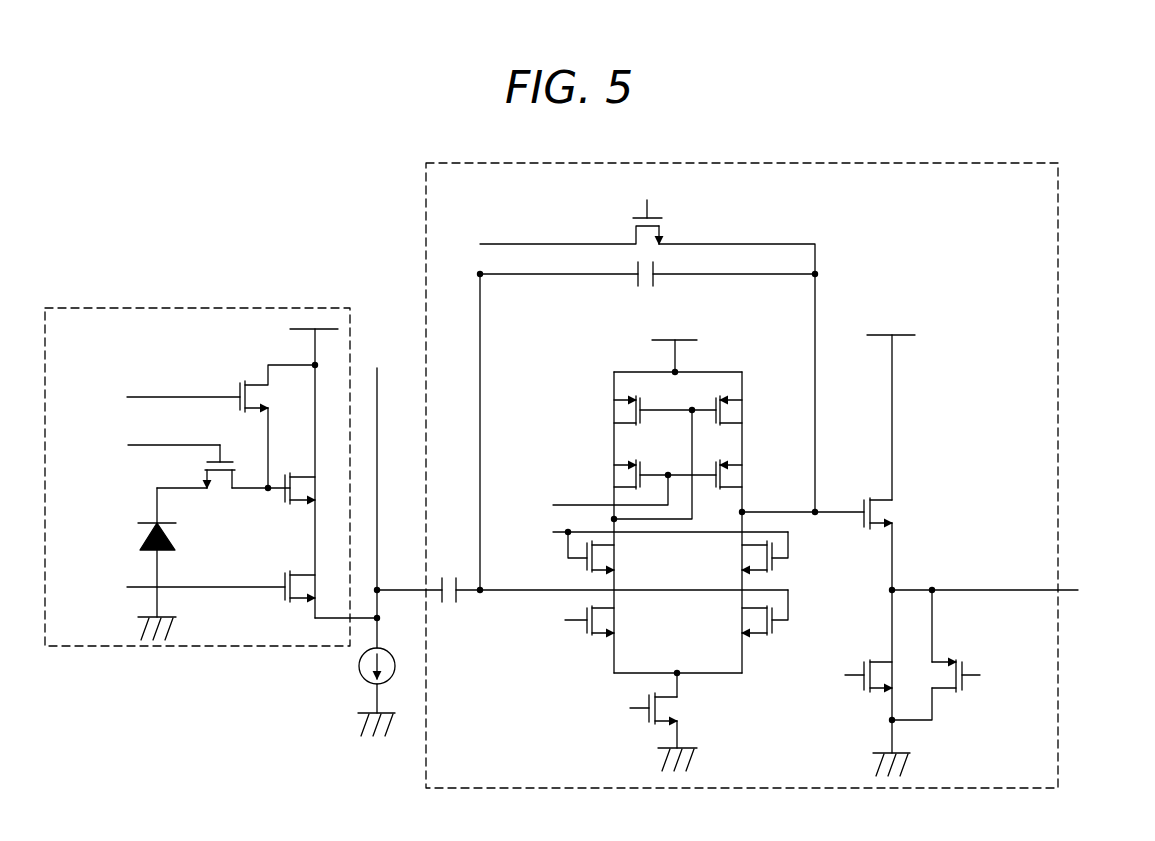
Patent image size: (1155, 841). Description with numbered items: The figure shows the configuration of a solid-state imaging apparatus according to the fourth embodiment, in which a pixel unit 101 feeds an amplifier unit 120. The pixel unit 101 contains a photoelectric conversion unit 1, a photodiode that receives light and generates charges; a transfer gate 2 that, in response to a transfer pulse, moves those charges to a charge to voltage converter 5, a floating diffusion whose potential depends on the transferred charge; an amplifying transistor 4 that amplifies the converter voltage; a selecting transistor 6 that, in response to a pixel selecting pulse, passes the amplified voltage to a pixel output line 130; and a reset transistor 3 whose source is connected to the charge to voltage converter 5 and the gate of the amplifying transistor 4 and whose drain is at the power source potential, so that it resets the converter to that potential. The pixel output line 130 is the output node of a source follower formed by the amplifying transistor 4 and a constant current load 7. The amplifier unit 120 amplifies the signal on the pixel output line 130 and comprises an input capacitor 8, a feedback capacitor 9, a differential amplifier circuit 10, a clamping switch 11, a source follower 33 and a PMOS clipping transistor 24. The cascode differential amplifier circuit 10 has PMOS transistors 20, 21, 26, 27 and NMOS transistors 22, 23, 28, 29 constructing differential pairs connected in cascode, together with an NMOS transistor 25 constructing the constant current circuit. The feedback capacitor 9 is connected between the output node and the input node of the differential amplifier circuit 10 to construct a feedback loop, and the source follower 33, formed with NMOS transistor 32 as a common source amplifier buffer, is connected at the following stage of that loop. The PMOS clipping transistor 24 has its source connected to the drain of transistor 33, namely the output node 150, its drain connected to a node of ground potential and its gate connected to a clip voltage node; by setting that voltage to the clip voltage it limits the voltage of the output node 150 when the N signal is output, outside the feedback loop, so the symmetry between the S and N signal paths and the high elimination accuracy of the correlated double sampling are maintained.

The photoelectric conversion unit 1 is at (148, 545).
The transfer gate 2 is at (222, 490).
The reset transistor 3 is at (234, 386).
The amplifying transistor 4 is at (308, 499).
The charge to voltage converter 5 is at (256, 490).
The selecting transistor 6 is at (284, 599).
The constant current load 7 is at (358, 672).
The input capacitor 8 is at (452, 608).
The feedback capacitor 9 is at (655, 283).
The differential amplifier circuit 10 is at (686, 555).
The clamping switch 11 is at (633, 234).
The PMOS transistor 20 is at (612, 410).
The PMOS transistor 21 is at (745, 410).
The NMOS transistor 22 is at (579, 632).
The NMOS transistor 23 is at (742, 620).
The PMOS clipping transistor 24 is at (960, 693).
The NMOS transistor 25 is at (682, 708).
The PMOS transistor 26 is at (612, 478).
The PMOS transistor 27 is at (745, 478).
The NMOS transistor 28 is at (614, 558).
The NMOS transistor 29 is at (742, 558).
The NMOS transistor 32 is at (862, 662).
The source follower 33 is at (895, 512).
The pixel unit 101 is at (272, 308).
The amplifier unit 120 is at (426, 283).
The pixel output line 130 is at (405, 590).
The output node 150 is at (1073, 590).